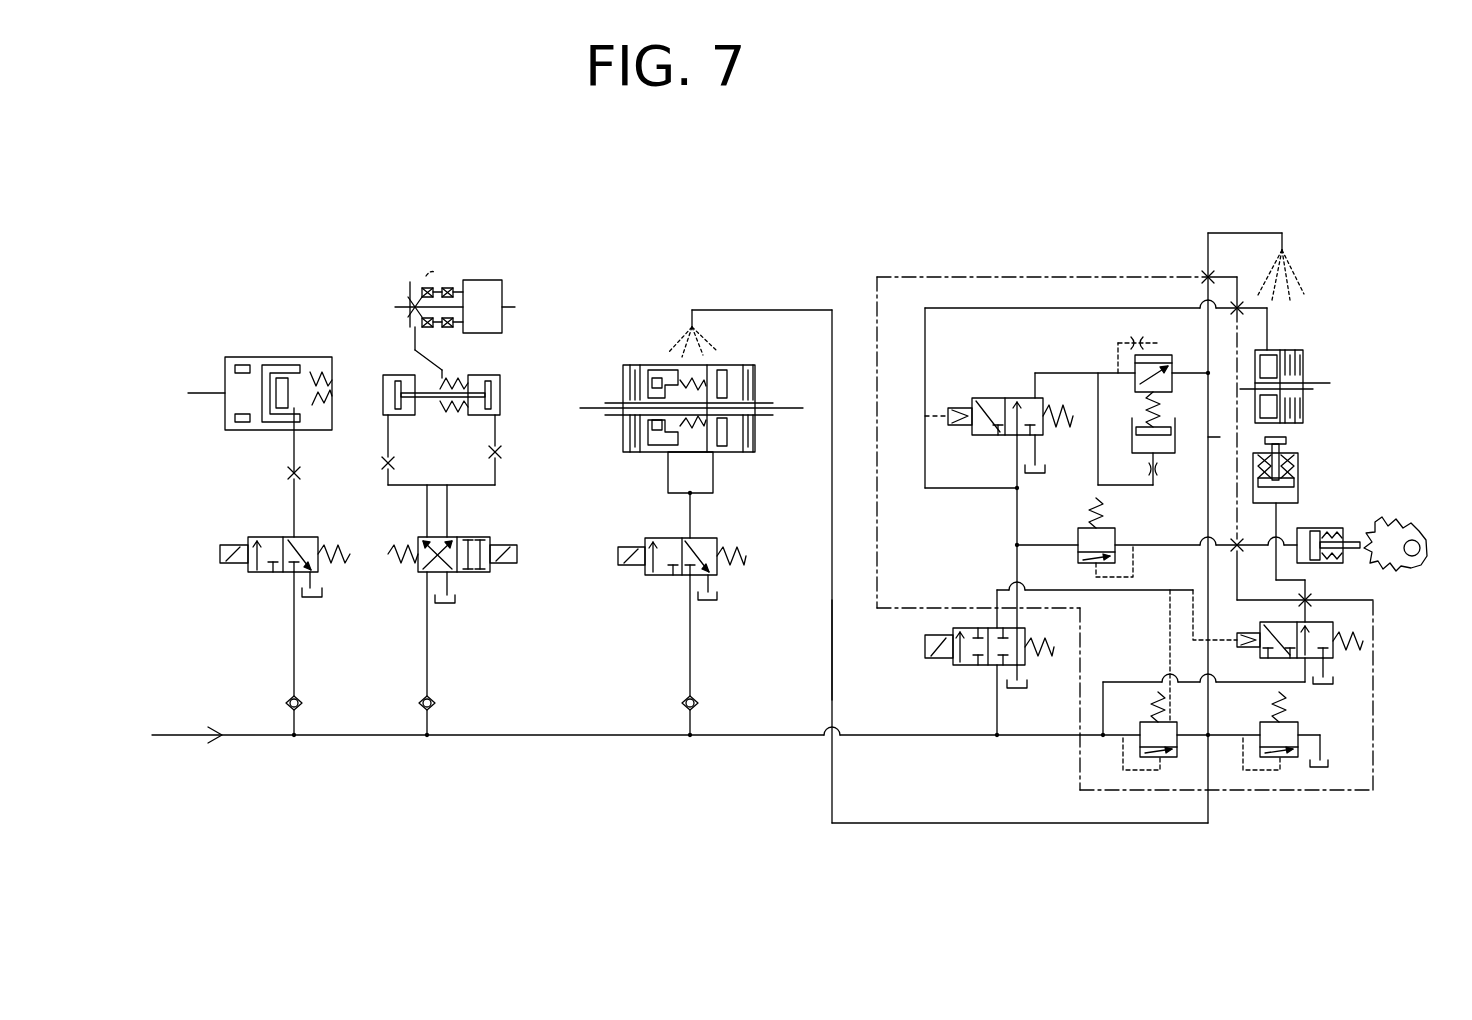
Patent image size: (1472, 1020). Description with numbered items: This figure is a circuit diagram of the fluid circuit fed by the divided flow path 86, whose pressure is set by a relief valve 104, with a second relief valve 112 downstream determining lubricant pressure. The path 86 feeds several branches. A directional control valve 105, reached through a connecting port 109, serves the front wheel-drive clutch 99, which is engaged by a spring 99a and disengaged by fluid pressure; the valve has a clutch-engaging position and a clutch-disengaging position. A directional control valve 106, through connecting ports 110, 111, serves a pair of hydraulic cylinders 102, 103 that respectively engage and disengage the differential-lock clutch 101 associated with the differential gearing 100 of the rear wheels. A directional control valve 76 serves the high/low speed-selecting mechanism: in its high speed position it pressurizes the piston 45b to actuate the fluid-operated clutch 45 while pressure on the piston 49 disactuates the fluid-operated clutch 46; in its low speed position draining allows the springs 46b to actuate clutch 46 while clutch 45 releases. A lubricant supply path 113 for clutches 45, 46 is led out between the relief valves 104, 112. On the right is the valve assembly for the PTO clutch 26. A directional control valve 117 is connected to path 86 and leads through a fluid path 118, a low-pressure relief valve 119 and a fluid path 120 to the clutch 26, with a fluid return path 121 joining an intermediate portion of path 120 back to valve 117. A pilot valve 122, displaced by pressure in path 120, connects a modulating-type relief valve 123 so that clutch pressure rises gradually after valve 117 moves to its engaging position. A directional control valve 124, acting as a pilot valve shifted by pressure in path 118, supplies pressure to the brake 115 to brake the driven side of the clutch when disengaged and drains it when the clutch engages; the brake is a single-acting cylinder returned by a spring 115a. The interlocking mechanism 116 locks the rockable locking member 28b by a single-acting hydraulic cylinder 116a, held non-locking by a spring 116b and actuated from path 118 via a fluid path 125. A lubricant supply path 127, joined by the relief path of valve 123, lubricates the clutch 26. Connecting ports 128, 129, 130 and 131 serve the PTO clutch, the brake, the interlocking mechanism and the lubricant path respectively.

The PTO clutch 26 is at (1292, 350).
The rockable locking member 28b is at (1392, 531).
The fluid-operated clutch 45 is at (746, 366).
The piston 45b is at (722, 366).
The fluid-operated clutch 46 is at (633, 364).
The springs 46b is at (690, 382).
The piston 49 is at (657, 366).
The directional control valve 76 is at (717, 540).
The divided flow path 86 is at (279, 736).
The front wheel-drive clutch 99 is at (297, 357).
The spring 99a is at (318, 398).
The differential gearing 100 is at (495, 282).
The differential-lock clutch 101 is at (449, 275).
The hydraulic cylinder 102 is at (500, 375).
The hydraulic cylinder 103 is at (385, 375).
The relief valve 104 is at (1178, 758).
The directional control valve 105 is at (320, 537).
The directional control valve 106 is at (492, 537).
The connecting port 109 is at (286, 473).
The connecting port 110 is at (505, 453).
The connecting port 111 is at (396, 464).
The relief valve 112 is at (1295, 722).
The lubricant supply path 113 is at (830, 670).
The brake 115 is at (1295, 440).
The spring 115a is at (1300, 472).
The interlocking mechanism 116 is at (1347, 525).
The single-acting hydraulic cylinder 116a is at (1313, 528).
The spring 116b is at (1335, 564).
The directional control valve 117 is at (953, 628).
The fluid path 118 is at (1153, 548).
The relief valve 119 is at (1116, 528).
The fluid path 120 is at (1047, 545).
The fluid return path 121 is at (1016, 568).
The pilot valve 122 is at (973, 398).
The modulating-type relief valve 123 is at (1165, 355).
The directional control valve 124 is at (1330, 623).
The fluid path 125 is at (1234, 543).
The lubricant supply path 127 is at (1210, 437).
The connecting port 128 is at (1245, 307).
The connecting port 129 is at (1297, 602).
The connecting port 130 is at (1235, 553).
The connecting port 131 is at (1205, 272).